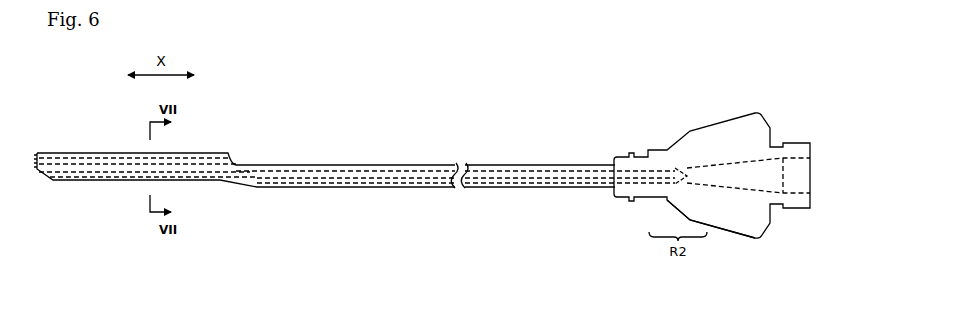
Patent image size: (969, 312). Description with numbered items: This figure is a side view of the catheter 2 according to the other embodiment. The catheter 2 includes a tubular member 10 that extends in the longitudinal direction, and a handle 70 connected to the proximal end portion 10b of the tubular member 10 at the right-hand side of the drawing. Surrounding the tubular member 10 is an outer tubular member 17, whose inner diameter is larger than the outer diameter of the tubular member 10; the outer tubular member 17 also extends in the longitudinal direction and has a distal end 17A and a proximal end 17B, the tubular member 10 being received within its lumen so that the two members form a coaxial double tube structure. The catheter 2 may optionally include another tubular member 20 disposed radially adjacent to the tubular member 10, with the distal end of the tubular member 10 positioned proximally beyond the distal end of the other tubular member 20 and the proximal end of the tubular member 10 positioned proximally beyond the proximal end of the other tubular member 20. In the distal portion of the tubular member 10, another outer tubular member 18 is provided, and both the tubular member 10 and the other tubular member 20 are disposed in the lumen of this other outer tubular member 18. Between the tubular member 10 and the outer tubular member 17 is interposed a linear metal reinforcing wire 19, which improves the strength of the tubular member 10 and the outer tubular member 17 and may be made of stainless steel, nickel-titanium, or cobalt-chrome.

The catheter 2 is at (454, 67).
The tubular member 10 is at (405, 170).
The proximal end portion of the tubular member 10b is at (624, 167).
The outer tubular member 17 is at (485, 165).
The distal end of the outer tubular member 17A is at (218, 183).
The proximal end of the outer tubular member 17B is at (662, 186).
The other outer tubular member 18 is at (85, 153).
The metal reinforcing wire 19 is at (420, 183).
The other tubular member 20 is at (176, 153).
The handle 70 is at (718, 126).